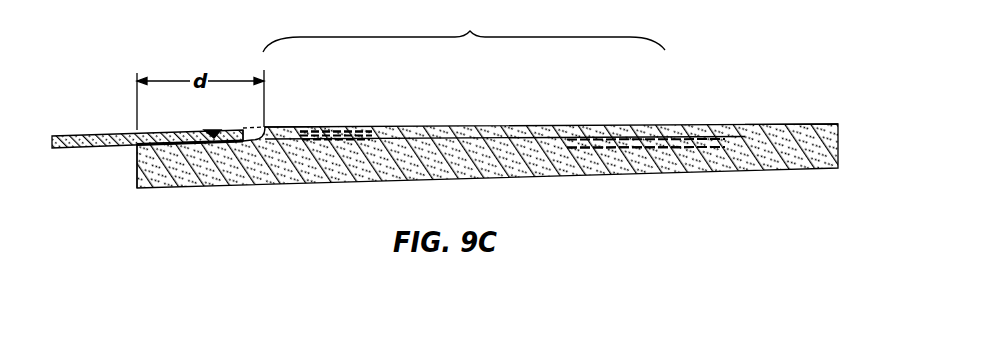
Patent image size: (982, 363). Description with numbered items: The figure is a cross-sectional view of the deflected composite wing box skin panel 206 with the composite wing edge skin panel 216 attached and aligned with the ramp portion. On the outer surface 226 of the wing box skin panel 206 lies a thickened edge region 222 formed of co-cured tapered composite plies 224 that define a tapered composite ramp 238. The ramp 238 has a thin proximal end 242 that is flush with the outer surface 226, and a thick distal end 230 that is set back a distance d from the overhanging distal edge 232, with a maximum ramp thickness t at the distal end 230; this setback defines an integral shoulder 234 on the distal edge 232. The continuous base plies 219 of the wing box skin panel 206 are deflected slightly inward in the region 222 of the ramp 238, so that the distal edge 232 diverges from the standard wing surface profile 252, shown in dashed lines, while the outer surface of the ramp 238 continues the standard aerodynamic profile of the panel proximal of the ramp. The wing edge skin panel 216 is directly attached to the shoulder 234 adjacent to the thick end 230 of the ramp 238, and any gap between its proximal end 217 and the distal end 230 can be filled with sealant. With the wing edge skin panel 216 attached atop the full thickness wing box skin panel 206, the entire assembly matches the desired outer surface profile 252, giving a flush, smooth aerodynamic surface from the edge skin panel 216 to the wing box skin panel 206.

The wing box skin panel 206 is at (765, 170).
The wing edge skin panel 216 is at (110, 135).
The proximal end of the wing edge skin panel 217 is at (235, 128).
The base plies 219 is at (658, 150).
The thickened edge region 222 is at (464, 31).
The tapered composite plies 224 is at (322, 130).
The outer surface 226 is at (758, 125).
The distal end of the ramp 230 is at (298, 127).
The distal edge 232 is at (135, 168).
The integral shoulder 234 is at (213, 131).
The composite ramp 238 is at (392, 127).
The proximal end of the ramp 242 is at (667, 125).
The standard wing surface profile 252 is at (307, 126).